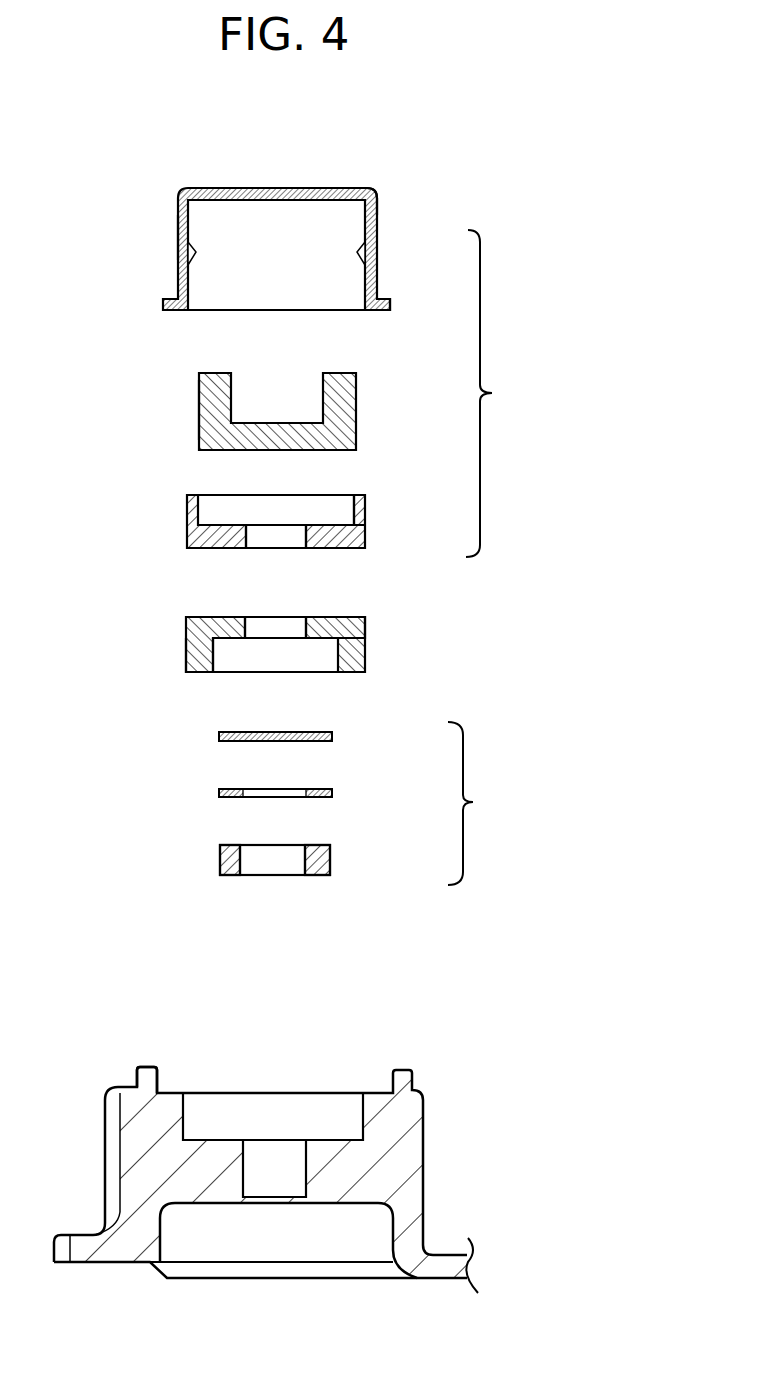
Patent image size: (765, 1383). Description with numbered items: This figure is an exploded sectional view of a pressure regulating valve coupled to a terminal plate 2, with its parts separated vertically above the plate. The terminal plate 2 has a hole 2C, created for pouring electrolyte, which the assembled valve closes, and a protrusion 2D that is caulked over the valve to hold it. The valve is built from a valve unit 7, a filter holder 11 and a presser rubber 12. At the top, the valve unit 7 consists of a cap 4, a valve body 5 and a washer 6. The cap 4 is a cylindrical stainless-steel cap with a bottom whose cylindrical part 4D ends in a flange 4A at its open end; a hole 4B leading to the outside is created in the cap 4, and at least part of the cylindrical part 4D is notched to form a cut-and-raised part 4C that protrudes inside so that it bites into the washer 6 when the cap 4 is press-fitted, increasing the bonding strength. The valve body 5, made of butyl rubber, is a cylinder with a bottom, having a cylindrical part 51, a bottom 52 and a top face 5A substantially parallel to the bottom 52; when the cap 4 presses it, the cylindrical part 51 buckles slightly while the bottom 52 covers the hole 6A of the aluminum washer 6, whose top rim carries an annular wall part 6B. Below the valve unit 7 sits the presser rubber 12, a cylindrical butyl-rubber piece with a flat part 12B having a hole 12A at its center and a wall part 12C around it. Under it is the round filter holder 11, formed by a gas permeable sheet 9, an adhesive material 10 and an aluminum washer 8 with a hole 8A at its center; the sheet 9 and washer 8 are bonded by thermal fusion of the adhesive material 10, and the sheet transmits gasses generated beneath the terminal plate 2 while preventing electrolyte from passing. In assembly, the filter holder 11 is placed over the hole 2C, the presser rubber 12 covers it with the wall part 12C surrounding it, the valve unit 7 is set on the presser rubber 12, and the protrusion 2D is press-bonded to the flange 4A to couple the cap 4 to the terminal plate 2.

The terminal plate 2 is at (437, 1133).
The hole 2C is at (266, 1173).
The protrusion 2D is at (150, 1078).
The cap 4 is at (277, 183).
The flange 4A is at (390, 300).
The hole 4B is at (368, 193).
The cut-and-raised part 4C is at (190, 257).
The cylindrical part 4D is at (178, 232).
The valve body 5 is at (362, 396).
The top face 5A is at (342, 374).
The cylindrical part 51 is at (212, 397).
The bottom 52 is at (342, 438).
The washer 6 is at (373, 533).
The hole 6A is at (273, 535).
The wall part 6B is at (360, 522).
The valve unit 7 is at (493, 393).
The washer 8 is at (330, 855).
The hole 8A is at (273, 858).
The gas permeable sheet 9 is at (332, 735).
The adhesive material 10 is at (332, 795).
The filter holder 11 is at (481, 803).
The presser rubber 12 is at (373, 642).
The hole 12A is at (263, 630).
The flat part 12B is at (347, 620).
The wall part 12C is at (190, 665).